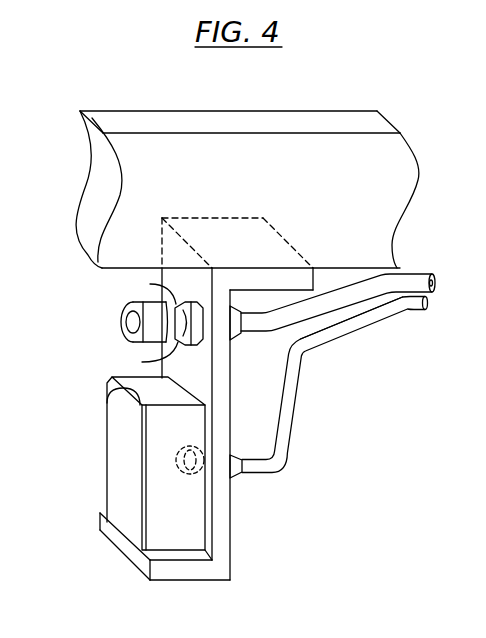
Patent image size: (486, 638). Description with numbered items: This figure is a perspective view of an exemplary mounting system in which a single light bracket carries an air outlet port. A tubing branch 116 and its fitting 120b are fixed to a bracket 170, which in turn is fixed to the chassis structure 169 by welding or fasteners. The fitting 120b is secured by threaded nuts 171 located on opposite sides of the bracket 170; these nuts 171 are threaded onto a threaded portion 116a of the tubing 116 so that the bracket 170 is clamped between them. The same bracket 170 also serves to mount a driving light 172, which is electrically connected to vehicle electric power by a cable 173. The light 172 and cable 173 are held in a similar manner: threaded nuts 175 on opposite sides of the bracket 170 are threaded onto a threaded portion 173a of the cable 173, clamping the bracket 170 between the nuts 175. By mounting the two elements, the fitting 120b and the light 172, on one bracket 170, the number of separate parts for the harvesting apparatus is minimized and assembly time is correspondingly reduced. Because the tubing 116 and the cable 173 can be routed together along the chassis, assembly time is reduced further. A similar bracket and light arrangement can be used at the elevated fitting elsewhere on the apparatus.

The chassis structure 169 is at (182, 147).
The tubing branch 116 is at (407, 268).
The threaded portion of the tubing 116a is at (162, 367).
The fitting 120b is at (119, 321).
The threaded nuts 171 is at (150, 284).
The cable 173 is at (325, 335).
The threaded portion of the cable 173a is at (243, 476).
The threaded nuts 175 is at (176, 457).
The driving light 172 is at (122, 495).
The bracket 170 is at (231, 527).